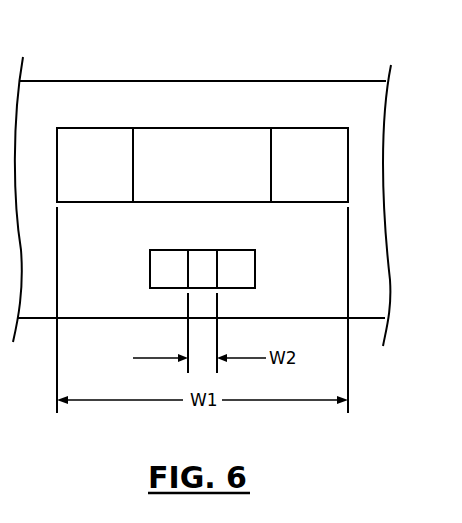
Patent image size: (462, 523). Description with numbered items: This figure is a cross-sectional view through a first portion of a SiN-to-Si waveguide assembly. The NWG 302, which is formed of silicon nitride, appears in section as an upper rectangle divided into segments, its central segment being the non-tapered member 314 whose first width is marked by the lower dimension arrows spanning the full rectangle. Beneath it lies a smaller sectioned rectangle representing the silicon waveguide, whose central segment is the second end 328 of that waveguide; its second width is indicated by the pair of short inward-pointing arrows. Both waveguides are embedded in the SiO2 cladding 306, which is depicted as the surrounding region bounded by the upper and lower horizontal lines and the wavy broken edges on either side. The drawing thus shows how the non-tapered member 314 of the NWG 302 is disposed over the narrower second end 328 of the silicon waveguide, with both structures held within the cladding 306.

The NWG 302 is at (174, 128).
The silicon dioxide cladding 306 is at (258, 93).
The non-tapered member 314 is at (271, 170).
The second end 328 is at (187, 270).